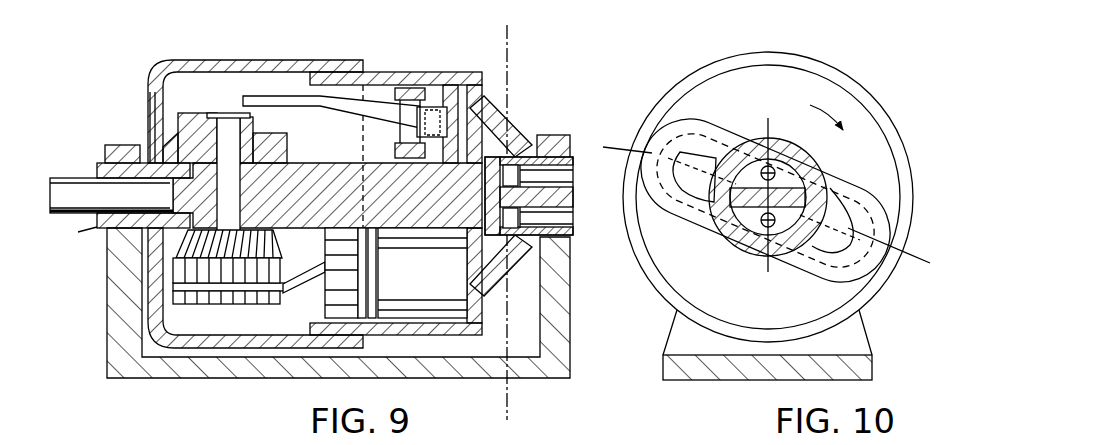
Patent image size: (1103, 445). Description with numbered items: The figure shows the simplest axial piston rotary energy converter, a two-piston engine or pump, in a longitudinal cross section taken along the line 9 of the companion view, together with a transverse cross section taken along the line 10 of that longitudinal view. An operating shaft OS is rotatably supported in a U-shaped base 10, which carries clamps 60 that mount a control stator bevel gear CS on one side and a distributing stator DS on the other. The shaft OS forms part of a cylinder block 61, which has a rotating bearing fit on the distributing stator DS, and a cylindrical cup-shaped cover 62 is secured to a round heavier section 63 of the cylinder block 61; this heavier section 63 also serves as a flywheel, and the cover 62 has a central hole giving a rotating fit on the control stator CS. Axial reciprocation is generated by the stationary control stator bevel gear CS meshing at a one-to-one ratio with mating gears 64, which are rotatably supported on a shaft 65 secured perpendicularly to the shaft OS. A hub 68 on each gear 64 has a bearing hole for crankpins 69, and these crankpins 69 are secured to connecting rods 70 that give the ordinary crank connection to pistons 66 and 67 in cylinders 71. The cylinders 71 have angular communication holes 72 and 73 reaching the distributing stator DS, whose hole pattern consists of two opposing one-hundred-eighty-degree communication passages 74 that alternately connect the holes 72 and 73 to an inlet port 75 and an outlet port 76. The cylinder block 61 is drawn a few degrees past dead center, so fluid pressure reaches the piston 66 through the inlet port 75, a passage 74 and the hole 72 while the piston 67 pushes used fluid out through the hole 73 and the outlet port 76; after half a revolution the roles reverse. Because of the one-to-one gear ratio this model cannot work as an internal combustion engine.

In FIG. 10, the section line 9— 9 is at (606, 147).
In FIG. 9, the U-shaped base 10 is at (527, 45).
In FIG. 10, the U-shaped base 10 is at (656, 357).
In FIG. 9, the clamps 60 is at (120, 145).
In FIG. 9, the cylinder block 61 is at (417, 72).
In FIG. 10, the cylinder block 61 is at (678, 252).
In FIG. 9, the cover 62 is at (296, 60).
In FIG. 10, the cover 62 is at (845, 68).
In FIG. 9, the round heavier section 63 is at (370, 80).
In FIG. 10, the round heavier section 63 is at (794, 98).
In FIG. 9, the mating gears 64 is at (172, 148).
In FIG. 9, the shaft 65 is at (227, 113).
In FIG. 9, the piston 66 is at (395, 151).
In FIG. 9, the piston 67 is at (382, 298).
In FIG. 9, the hub 68 is at (198, 113).
In FIG. 9, the crankpins 69 is at (262, 95).
In FIG. 9, the connecting rods 70 is at (322, 106).
In FIG. 9, the cylinders 71 is at (350, 153).
In FIG. 10, the cylinders 71 is at (665, 108).
In FIG. 9, the angular communication hole 72 is at (481, 123).
In FIG. 10, the angular communication hole 72 is at (728, 177).
In FIG. 9, the angular communication hole 73 is at (465, 280).
In FIG. 10, the angular communication hole 73 is at (800, 243).
In FIG. 9, the communication passages 74 is at (513, 152).
In FIG. 10, the communication passages 74 is at (830, 186).
In FIG. 9, the inlet port 75 is at (563, 180).
In FIG. 10, the inlet port 75 is at (783, 153).
In FIG. 9, the outlet port 76 is at (567, 222).
In FIG. 10, the outlet port 76 is at (760, 228).
In FIG. 9, the operating shaft OS is at (78, 178).
In FIG. 9, the control stator bevel gear CS is at (97, 227).
In FIG. 9, the distributing stator DS is at (582, 243).